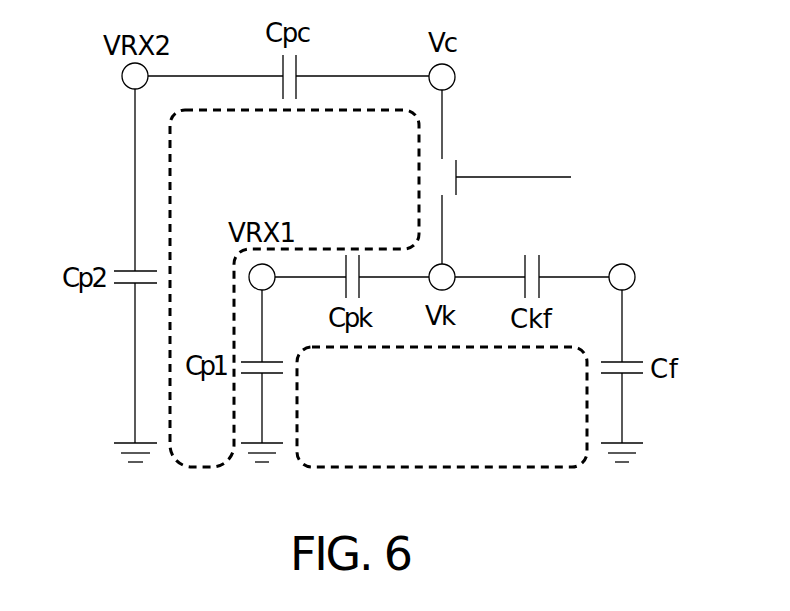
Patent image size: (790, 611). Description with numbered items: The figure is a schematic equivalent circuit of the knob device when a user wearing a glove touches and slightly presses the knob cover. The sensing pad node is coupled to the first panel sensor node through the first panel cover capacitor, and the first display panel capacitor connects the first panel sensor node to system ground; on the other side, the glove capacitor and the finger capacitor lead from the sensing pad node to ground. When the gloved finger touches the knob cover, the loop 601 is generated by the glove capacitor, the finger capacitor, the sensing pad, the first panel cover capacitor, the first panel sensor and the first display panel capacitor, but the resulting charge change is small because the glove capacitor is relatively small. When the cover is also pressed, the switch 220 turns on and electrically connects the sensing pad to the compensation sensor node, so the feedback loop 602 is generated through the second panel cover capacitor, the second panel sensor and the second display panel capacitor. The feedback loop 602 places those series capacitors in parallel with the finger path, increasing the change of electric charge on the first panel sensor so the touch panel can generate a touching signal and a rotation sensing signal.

The switch 220 is at (537, 177).
The loop 601 is at (490, 467).
The feedback loop 602 is at (202, 468).